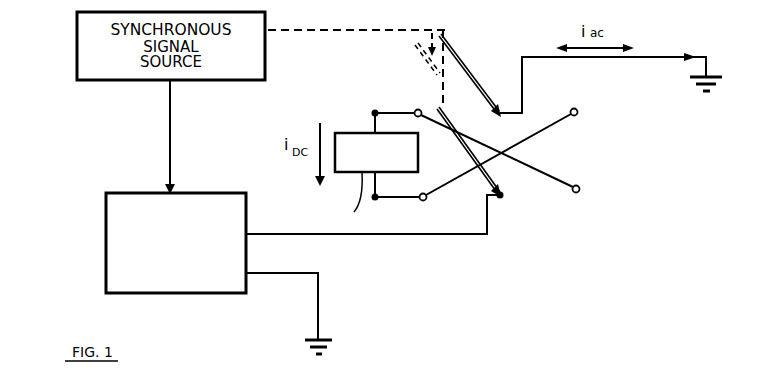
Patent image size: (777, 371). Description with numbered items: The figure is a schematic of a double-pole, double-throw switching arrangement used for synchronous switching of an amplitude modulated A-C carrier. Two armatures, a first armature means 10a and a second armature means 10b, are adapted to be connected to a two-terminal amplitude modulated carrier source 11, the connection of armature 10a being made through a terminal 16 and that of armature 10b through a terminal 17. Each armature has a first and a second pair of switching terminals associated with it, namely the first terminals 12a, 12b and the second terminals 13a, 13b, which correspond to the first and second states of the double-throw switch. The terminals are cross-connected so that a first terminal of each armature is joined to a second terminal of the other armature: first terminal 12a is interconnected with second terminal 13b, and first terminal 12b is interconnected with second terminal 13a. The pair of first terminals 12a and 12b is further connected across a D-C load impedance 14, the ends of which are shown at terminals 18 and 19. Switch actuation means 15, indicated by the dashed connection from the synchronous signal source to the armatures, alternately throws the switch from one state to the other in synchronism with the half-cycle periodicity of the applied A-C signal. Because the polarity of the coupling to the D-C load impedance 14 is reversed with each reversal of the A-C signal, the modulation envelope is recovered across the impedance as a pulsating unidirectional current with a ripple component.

The first armature means 10a is at (472, 79).
The second armature means 10b is at (460, 139).
The amplitude modulated carrier source 11 is at (120, 266).
The first switching terminal 12a is at (417, 110).
The first switching terminal 12b is at (427, 198).
The second switching terminal 13a is at (578, 113).
The second switching terminal 13b is at (580, 190).
The D-C load impedance 14 is at (350, 133).
The switch actuation means 15 is at (388, 31).
The switch arm output terminal 16 is at (500, 110).
The switch arm output terminal 17 is at (504, 196).
The load impedance terminal 18 is at (375, 110).
The load impedance terminal 19 is at (375, 200).